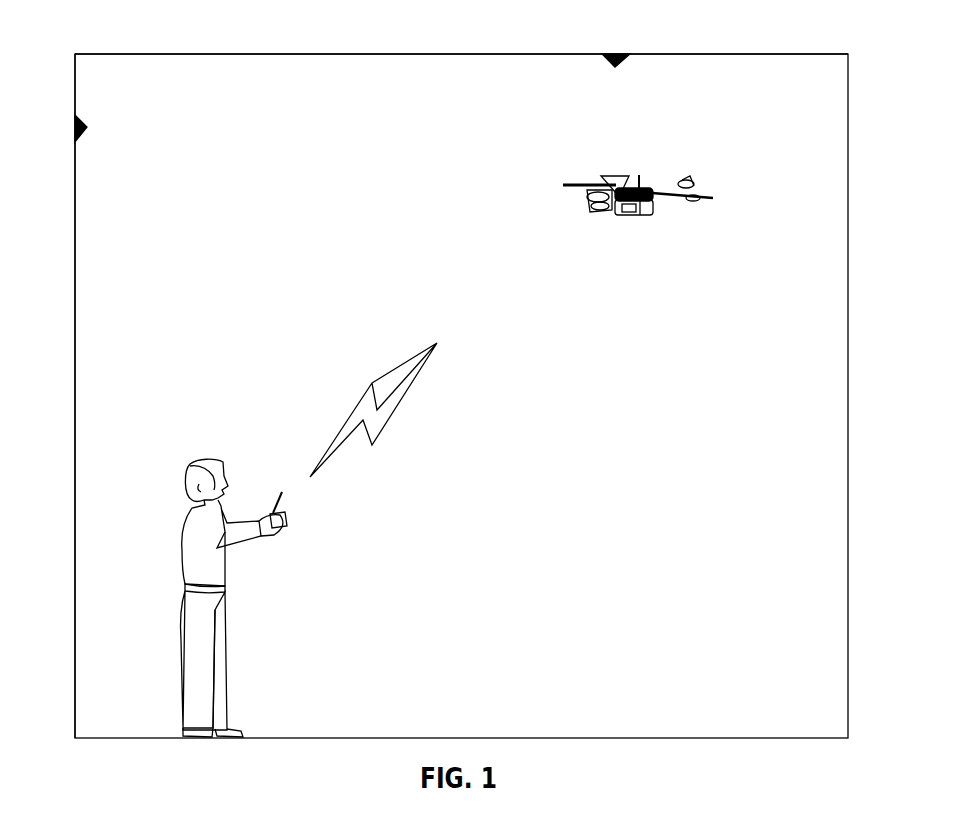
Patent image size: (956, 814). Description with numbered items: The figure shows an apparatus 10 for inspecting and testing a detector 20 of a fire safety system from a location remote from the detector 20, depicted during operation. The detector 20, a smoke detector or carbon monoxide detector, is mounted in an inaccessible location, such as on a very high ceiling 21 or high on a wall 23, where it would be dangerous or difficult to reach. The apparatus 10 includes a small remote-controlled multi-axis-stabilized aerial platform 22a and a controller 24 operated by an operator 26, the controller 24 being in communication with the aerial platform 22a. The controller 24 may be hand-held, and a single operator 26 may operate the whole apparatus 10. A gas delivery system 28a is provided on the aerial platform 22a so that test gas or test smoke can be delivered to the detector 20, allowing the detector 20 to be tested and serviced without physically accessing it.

The apparatus 10 is at (618, 535).
The detector 20 is at (614, 51).
The ceiling 21 is at (788, 53).
The aerial platform 22a is at (637, 205).
The wall 23 is at (80, 275).
The controller 24 is at (293, 507).
The operator 26 is at (205, 447).
The gas delivery system 28a is at (596, 172).